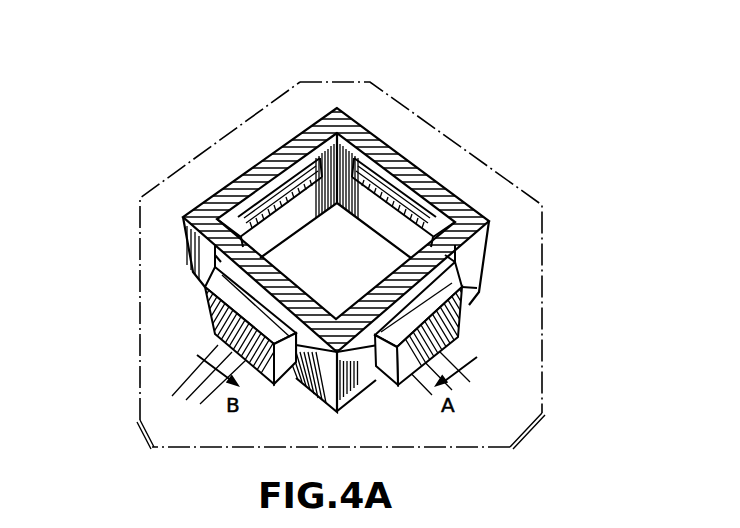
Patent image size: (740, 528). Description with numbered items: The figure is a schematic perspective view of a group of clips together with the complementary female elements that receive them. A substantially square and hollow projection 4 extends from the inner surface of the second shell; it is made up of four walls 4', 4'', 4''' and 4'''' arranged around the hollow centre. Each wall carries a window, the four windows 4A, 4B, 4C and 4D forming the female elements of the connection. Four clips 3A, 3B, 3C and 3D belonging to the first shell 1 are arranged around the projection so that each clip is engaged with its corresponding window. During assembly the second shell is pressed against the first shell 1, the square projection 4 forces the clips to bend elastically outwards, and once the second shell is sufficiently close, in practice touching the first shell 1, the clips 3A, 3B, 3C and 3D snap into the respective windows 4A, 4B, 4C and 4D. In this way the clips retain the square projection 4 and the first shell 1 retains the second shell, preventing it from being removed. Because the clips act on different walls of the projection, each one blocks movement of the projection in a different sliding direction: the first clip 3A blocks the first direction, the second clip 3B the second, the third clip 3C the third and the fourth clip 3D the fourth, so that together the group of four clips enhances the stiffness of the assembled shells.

The first shell 1 is at (154, 364).
The square projection 4 is at (364, 260).
The wall 4' is at (149, 189).
The wall 4'' is at (343, 381).
The wall 4''' is at (382, 129).
The wall 4'''' is at (291, 129).
The first clip 3A is at (225, 315).
The second clip 3B is at (445, 315).
The third clip 3C is at (400, 196).
The fourth clip 3D is at (245, 224).
The window 4A is at (220, 272).
The window 4B is at (463, 278).
The window 4C is at (392, 160).
The window 4D is at (308, 158).